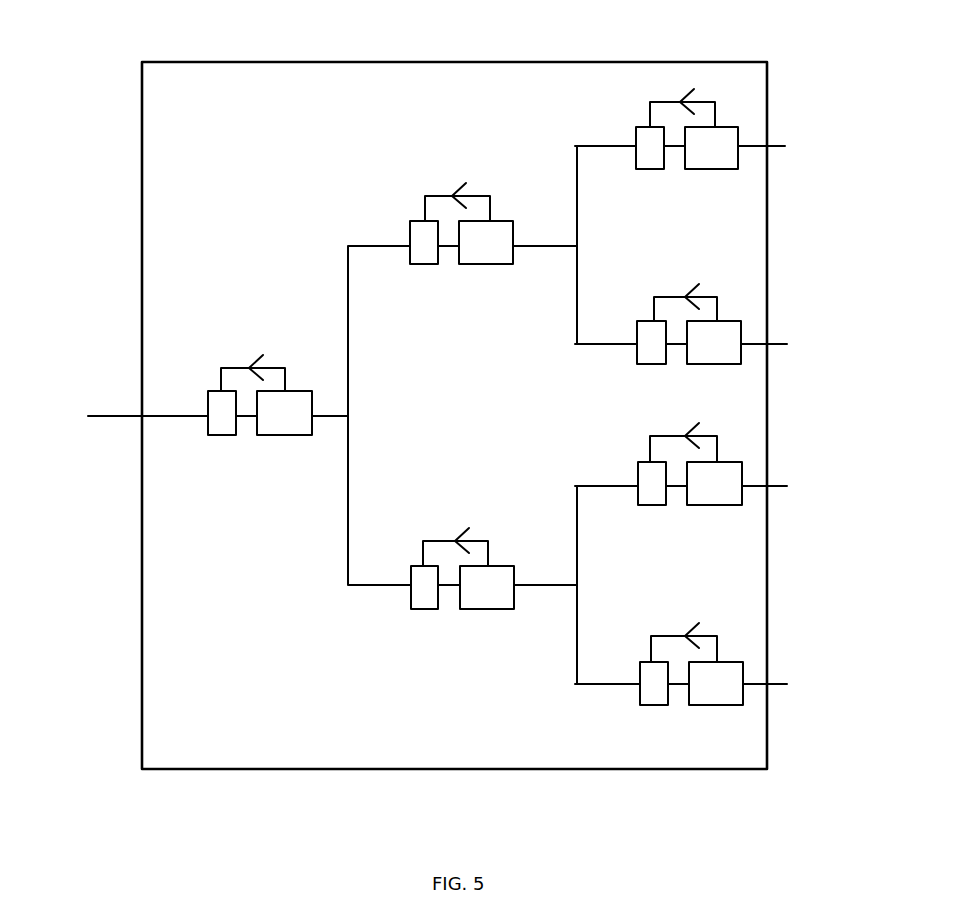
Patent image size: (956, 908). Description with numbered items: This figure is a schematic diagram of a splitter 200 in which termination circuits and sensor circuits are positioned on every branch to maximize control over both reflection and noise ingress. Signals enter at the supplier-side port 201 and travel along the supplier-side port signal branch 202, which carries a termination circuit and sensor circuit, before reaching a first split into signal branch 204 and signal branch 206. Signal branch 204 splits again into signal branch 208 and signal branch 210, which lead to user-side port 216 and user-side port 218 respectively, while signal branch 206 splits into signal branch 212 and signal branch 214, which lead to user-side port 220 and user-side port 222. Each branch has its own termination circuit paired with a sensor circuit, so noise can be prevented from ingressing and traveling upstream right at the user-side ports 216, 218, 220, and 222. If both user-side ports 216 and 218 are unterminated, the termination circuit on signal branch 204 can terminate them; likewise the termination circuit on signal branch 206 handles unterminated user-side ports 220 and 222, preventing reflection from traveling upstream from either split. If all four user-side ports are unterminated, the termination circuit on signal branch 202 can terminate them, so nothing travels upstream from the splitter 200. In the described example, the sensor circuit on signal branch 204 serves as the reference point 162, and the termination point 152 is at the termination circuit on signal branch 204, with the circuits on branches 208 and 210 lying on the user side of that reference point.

The splitter 200 is at (505, 62).
The supplier-side port 201 is at (200, 416).
The supplier-side port signal branch 202 is at (221, 385).
The signal branch 204 is at (462, 320).
The signal branch 206 is at (462, 513).
The signal branch 208 is at (680, 233).
The signal branch 210 is at (681, 358).
The signal branch 212 is at (681, 573).
The signal branch 214 is at (681, 698).
The user-side port 216 is at (817, 145).
The user-side port 218 is at (817, 343).
The user-side port 220 is at (817, 485).
The user-side port 222 is at (817, 683).
The termination point 152 is at (410, 208).
The reference point 162 is at (496, 206).